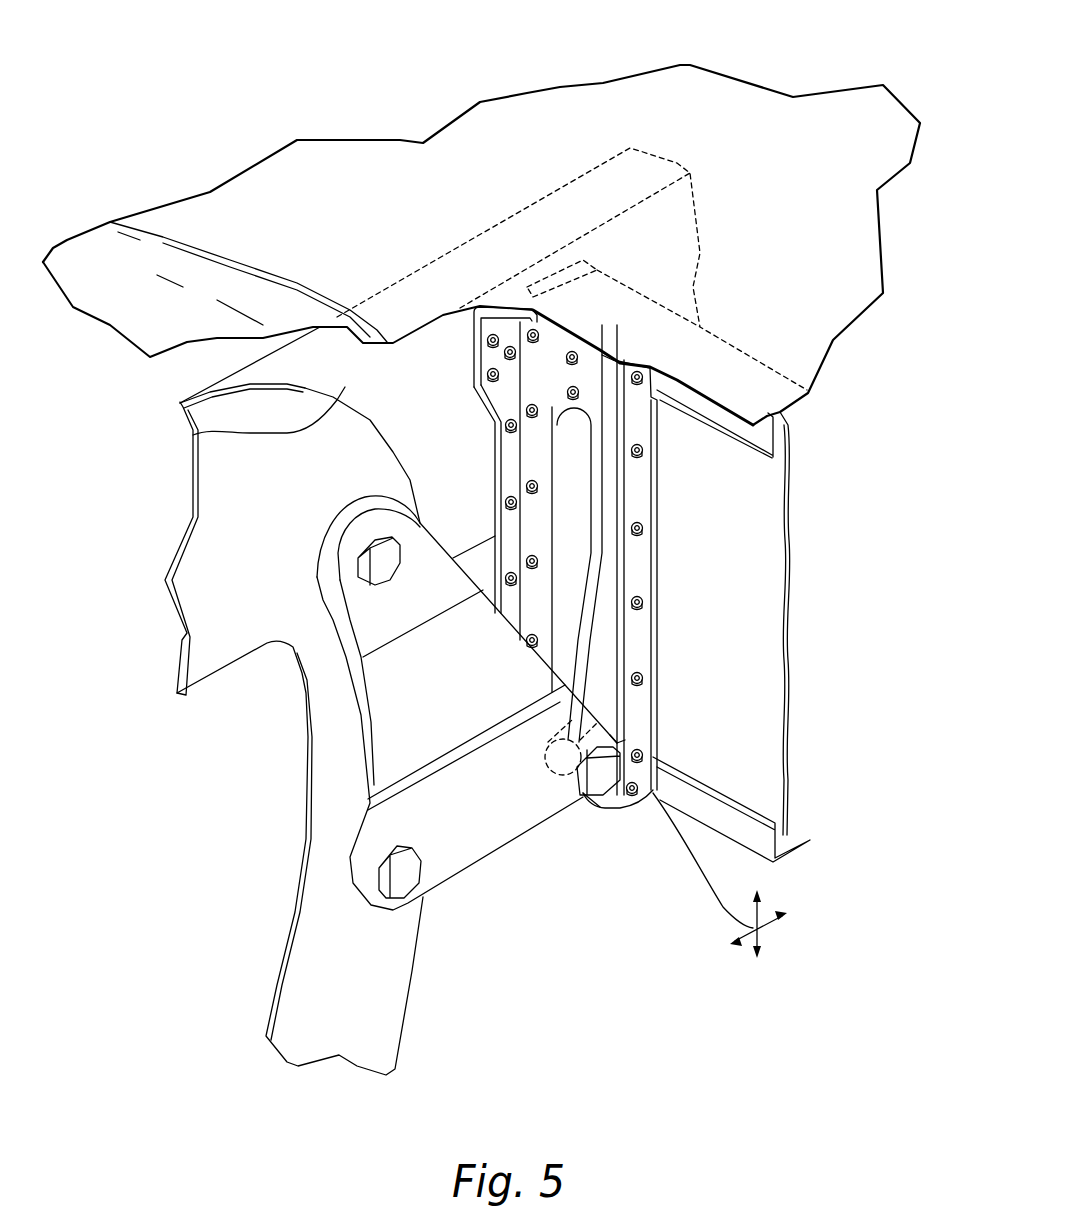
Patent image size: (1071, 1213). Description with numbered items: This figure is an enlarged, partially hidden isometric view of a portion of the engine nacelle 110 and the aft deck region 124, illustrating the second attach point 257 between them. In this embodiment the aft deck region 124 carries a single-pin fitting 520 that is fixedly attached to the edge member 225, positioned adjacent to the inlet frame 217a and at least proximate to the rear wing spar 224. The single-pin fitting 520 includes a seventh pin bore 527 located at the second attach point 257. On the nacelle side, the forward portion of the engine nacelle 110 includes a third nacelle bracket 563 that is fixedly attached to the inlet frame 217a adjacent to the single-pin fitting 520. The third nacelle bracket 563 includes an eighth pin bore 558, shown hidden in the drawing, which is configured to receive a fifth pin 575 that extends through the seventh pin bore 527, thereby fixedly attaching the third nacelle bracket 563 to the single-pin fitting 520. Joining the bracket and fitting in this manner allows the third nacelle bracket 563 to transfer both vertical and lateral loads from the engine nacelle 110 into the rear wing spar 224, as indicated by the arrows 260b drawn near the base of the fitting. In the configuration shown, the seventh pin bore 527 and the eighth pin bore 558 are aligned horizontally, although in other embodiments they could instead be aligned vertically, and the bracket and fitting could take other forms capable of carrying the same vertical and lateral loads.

The engine nacelle 110 is at (371, 395).
The aft deck region 124 is at (763, 113).
The rear wing spar 224 is at (200, 435).
The inlet frame 217a is at (355, 462).
The edge member 225 is at (746, 576).
The single-pin fitting 520 is at (607, 633).
The seventh pin bore 527 is at (617, 743).
The fifth pin 575 is at (607, 757).
The eighth pin bore 558 is at (560, 793).
The second attach point 257 is at (583, 797).
The third nacelle bracket 563 is at (474, 854).
The arrows 260b is at (760, 930).